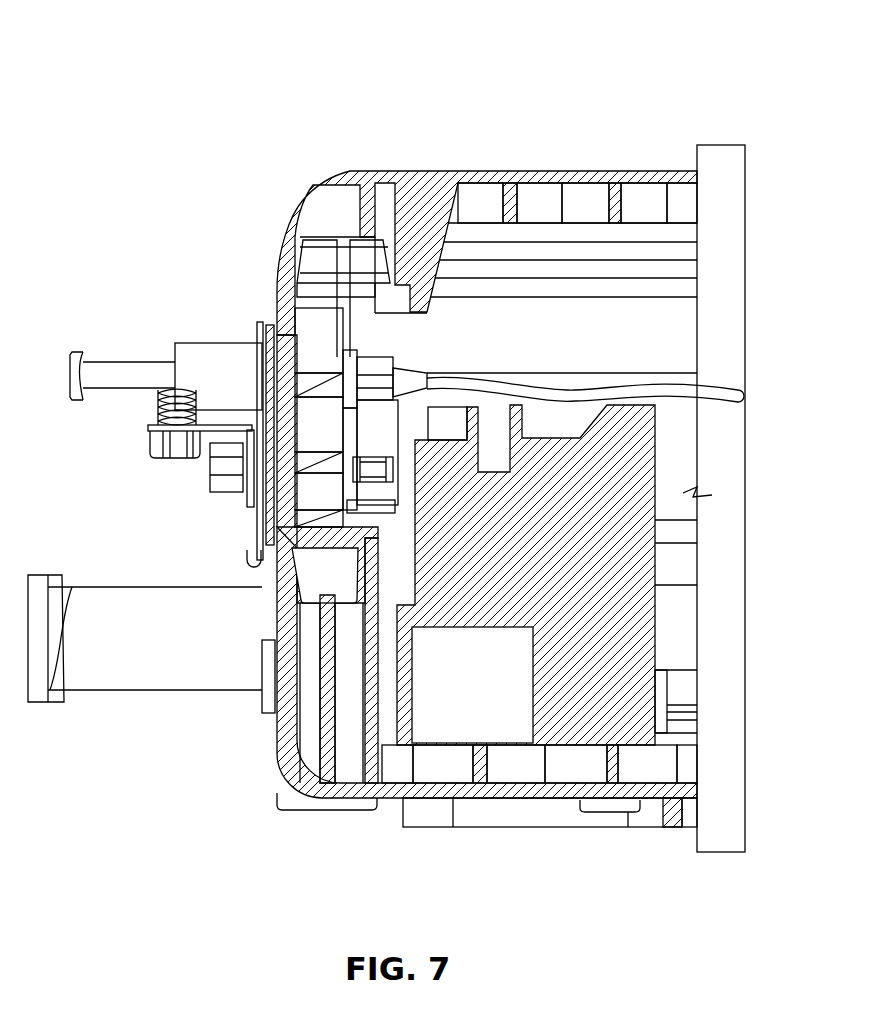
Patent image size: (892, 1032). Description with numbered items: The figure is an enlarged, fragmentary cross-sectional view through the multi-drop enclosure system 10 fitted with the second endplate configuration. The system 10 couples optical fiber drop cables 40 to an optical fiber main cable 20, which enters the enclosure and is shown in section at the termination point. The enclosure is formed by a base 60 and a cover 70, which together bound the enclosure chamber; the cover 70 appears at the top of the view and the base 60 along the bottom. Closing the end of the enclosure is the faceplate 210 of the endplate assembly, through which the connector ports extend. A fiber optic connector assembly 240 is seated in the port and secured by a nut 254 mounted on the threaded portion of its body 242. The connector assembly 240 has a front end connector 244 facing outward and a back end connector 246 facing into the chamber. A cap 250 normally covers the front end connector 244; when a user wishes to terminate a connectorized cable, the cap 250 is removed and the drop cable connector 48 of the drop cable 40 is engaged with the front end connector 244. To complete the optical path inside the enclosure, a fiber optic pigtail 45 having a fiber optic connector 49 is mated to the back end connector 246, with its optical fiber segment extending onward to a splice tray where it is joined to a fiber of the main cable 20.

The multi-drop enclosure system 10 is at (137, 53).
The cover 70 is at (536, 171).
The drop cable connector 48 is at (226, 347).
The optical fiber drop cable 40 is at (120, 368).
The fiber optic connector 49 is at (382, 362).
The nut 254 is at (356, 447).
The fiber optic pigtail 45 is at (578, 380).
The cap 250 is at (222, 452).
The fiber optic connector assembly 240 is at (186, 470).
The front end connector 244 is at (250, 469).
The body 242 is at (255, 492).
The faceplate 210 is at (303, 563).
The optical fiber main cable 20 is at (112, 594).
The back end connector 246 is at (372, 474).
The base 60 is at (527, 792).